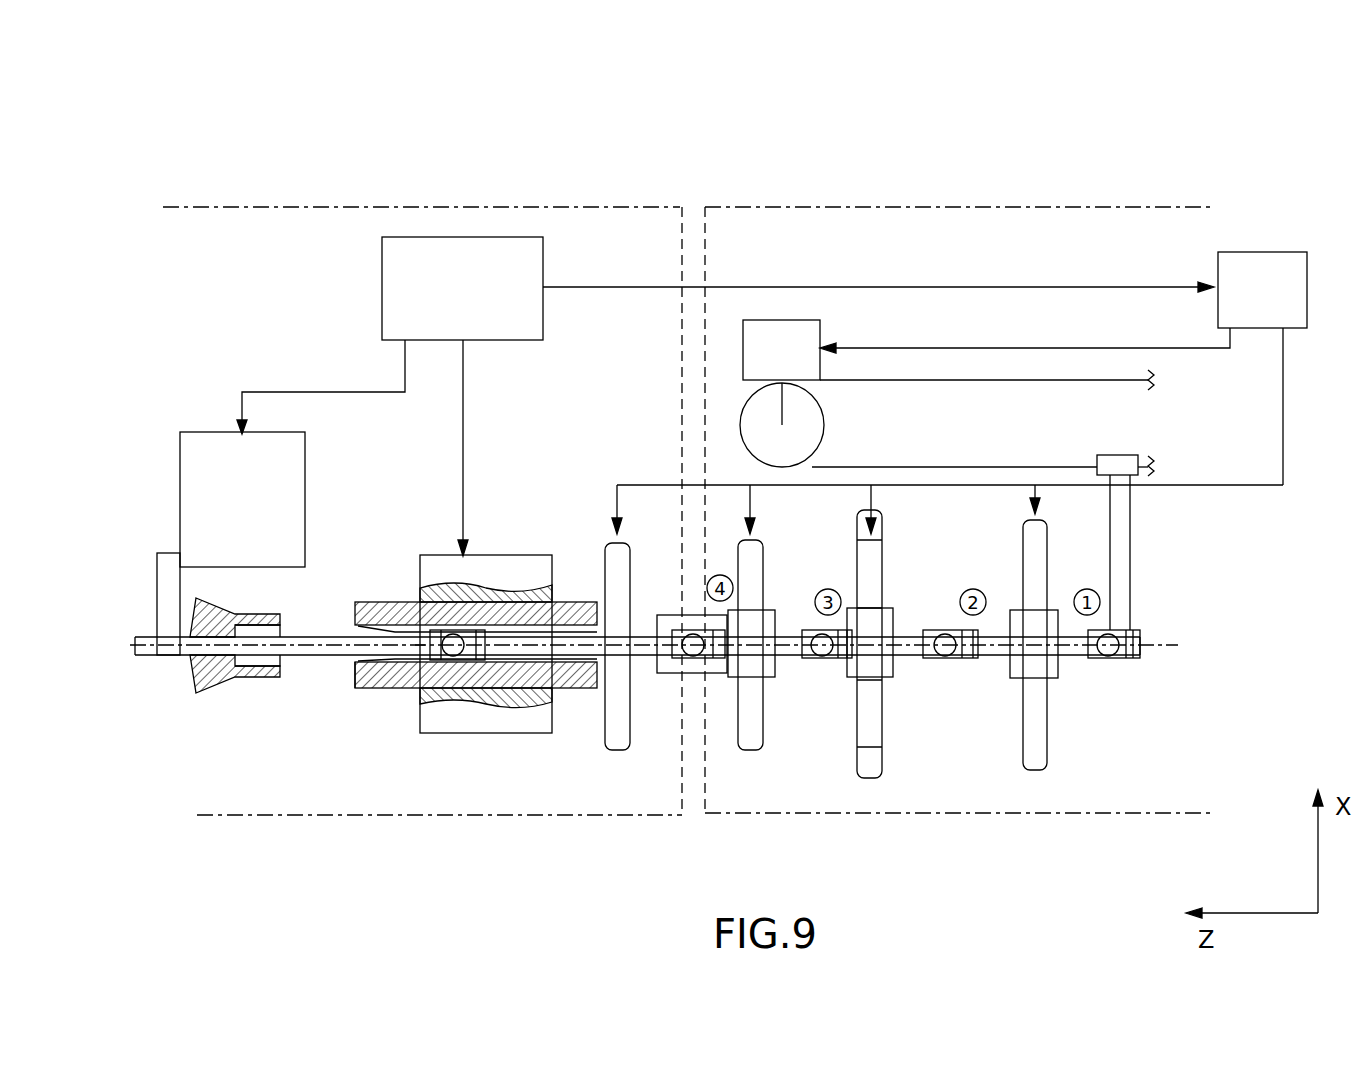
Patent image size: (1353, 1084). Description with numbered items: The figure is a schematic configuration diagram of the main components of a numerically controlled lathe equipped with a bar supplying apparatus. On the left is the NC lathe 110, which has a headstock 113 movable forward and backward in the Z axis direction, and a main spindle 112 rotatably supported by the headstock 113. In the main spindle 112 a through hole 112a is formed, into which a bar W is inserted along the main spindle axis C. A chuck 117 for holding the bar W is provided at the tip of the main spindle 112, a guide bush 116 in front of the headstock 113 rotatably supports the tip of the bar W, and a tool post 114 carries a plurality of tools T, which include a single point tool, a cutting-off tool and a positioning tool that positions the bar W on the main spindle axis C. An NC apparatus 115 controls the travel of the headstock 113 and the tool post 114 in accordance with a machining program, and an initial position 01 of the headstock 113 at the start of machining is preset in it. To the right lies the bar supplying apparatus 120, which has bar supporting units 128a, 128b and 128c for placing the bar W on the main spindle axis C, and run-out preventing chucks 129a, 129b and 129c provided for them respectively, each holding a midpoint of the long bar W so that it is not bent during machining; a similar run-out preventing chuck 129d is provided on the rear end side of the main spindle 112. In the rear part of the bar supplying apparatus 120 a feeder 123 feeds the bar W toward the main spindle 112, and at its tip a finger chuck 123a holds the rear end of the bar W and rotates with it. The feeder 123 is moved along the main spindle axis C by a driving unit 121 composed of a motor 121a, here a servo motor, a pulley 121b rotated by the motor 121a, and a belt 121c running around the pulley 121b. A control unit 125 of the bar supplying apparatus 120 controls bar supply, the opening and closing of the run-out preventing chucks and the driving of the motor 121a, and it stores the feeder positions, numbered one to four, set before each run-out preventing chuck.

The NC lathe 110 is at (452, 198).
The bar supplying apparatus 120 is at (1050, 118).
The NC apparatus 115 is at (396, 262).
The tool post 114 is at (206, 446).
The headstock 113 is at (436, 560).
The main spindle 112 is at (353, 690).
The through hole 112a is at (513, 658).
The guide bush 116 is at (206, 692).
The chuck 117 is at (351, 670).
The initial position of the headstock 01 is at (417, 658).
The finger chuck 123a is at (456, 662).
The feeder 123 is at (1120, 660).
The control unit 125 is at (1262, 268).
The driving unit 121 is at (930, 316).
The motor 121a is at (806, 320).
The pulley 121b is at (808, 425).
The belt 121c is at (1052, 382).
The run-out preventing chuck 129d is at (620, 746).
The run-out preventing chuck 129c is at (766, 736).
The run-out preventing chuck 129b is at (880, 778).
The run-out preventing chuck 129a is at (1050, 770).
The bar supporting unit 128c is at (770, 678).
The bar supporting unit 128b is at (890, 672).
The bar supporting unit 128a is at (1056, 680).
The tool T is at (160, 618).
The bar W is at (328, 636).
The main spindle axis C is at (1180, 644).